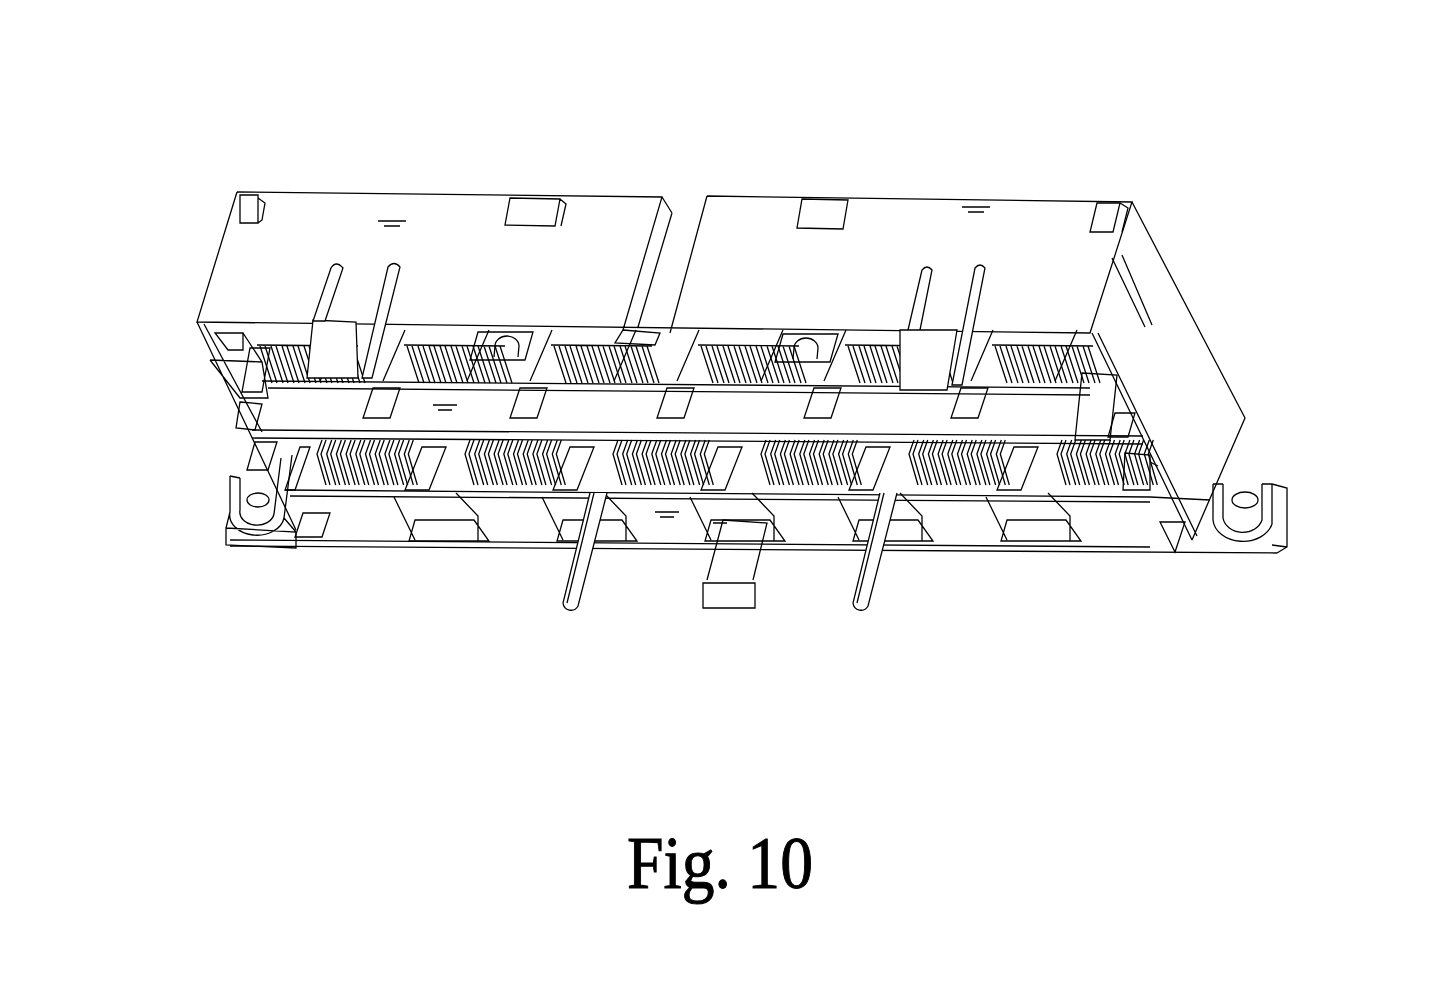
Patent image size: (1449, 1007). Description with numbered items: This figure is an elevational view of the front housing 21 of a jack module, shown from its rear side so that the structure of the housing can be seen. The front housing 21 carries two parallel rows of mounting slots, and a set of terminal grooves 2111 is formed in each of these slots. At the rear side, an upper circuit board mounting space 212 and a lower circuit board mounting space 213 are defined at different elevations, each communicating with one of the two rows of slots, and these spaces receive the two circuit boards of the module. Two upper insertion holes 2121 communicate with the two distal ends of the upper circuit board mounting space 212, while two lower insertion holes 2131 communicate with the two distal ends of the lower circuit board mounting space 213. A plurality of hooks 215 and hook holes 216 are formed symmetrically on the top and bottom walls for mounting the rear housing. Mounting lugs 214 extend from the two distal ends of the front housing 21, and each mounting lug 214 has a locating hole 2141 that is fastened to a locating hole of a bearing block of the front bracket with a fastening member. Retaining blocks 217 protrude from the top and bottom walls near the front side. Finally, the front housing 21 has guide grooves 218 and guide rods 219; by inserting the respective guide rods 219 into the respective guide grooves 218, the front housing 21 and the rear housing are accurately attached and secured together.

The front housing 21 is at (1210, 283).
The terminal grooves 2111 is at (281, 352).
The upper circuit board mounting space 212 is at (520, 445).
The upper insertion holes 2121 is at (323, 384).
The lower circuit board mounting space 213 is at (318, 520).
The lower insertion holes 2131 is at (277, 448).
The mounting lugs 214 is at (228, 541).
The locating hole 2141 is at (258, 505).
The hooks 215 is at (731, 597).
The hook holes 216 is at (694, 200).
The retaining blocks 217 is at (251, 195).
The guide grooves 218 is at (503, 340).
The guide rods 219 is at (585, 604).